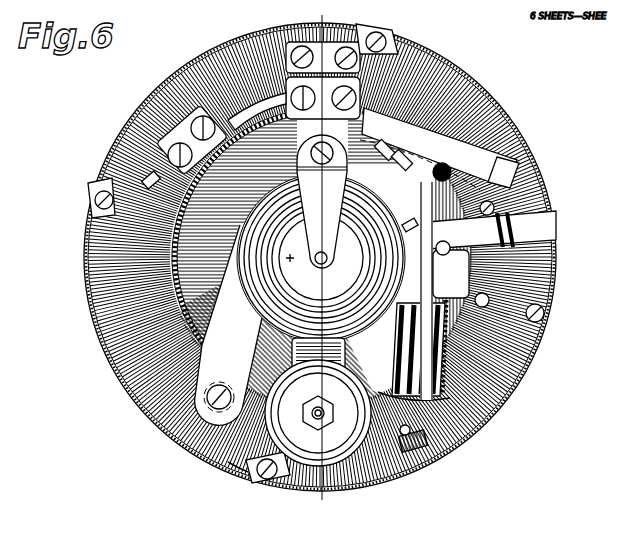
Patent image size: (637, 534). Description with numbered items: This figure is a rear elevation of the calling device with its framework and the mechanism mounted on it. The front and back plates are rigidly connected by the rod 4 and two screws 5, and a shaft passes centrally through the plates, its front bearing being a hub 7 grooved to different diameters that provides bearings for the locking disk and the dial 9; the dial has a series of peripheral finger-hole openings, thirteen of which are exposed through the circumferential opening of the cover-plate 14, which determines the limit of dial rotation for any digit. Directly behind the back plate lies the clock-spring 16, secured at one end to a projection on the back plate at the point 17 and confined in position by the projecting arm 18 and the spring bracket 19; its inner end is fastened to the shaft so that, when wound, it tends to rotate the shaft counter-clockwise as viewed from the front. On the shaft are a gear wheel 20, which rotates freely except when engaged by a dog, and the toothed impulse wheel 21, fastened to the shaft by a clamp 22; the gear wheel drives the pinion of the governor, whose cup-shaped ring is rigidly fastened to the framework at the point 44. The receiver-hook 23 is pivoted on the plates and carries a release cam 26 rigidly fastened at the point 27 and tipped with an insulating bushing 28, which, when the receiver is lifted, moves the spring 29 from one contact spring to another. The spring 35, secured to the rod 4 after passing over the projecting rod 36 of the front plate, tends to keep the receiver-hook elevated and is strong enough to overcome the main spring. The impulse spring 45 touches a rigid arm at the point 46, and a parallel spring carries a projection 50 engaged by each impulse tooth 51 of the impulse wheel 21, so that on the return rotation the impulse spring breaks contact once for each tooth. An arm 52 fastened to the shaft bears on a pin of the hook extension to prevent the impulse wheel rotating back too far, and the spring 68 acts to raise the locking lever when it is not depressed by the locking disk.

The rod 4 is at (210, 421).
The screws 5 is at (303, 44).
The hub 7 is at (324, 17).
The dial 9 is at (173, 239).
The cover-plate 14 is at (85, 277).
The clock-spring 16 is at (210, 372).
The point 17 is at (177, 328).
The projecting arm 18 is at (457, 200).
The spring bracket 19 is at (470, 103).
The gear wheel 20 is at (180, 203).
The impulse wheel 21 is at (400, 125).
The clamp 22 is at (430, 110).
The receiver-hook 23 is at (467, 245).
The release cam 26 is at (495, 183).
The point 27 is at (490, 281).
The insulating bushing 28 is at (530, 147).
The spring 29 is at (548, 292).
The spring 35 is at (222, 446).
The projecting rod 36 is at (233, 470).
The point 44 is at (370, 460).
The impulse spring 45 is at (245, 100).
The point 46 is at (550, 214).
The projection 50 is at (365, 133).
The impulse tooth 51 is at (470, 300).
The arm 52 is at (455, 395).
The spring 68 is at (404, 447).